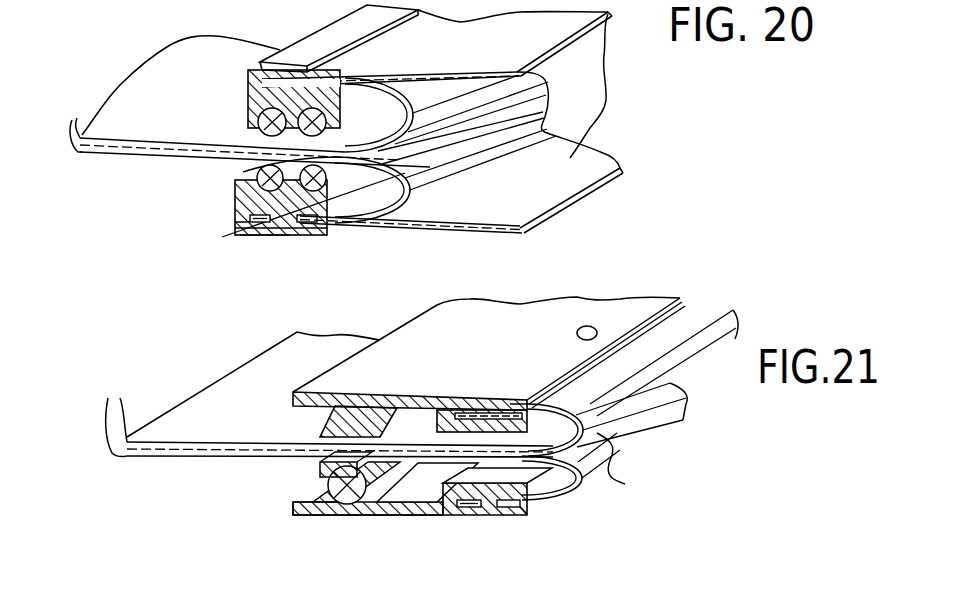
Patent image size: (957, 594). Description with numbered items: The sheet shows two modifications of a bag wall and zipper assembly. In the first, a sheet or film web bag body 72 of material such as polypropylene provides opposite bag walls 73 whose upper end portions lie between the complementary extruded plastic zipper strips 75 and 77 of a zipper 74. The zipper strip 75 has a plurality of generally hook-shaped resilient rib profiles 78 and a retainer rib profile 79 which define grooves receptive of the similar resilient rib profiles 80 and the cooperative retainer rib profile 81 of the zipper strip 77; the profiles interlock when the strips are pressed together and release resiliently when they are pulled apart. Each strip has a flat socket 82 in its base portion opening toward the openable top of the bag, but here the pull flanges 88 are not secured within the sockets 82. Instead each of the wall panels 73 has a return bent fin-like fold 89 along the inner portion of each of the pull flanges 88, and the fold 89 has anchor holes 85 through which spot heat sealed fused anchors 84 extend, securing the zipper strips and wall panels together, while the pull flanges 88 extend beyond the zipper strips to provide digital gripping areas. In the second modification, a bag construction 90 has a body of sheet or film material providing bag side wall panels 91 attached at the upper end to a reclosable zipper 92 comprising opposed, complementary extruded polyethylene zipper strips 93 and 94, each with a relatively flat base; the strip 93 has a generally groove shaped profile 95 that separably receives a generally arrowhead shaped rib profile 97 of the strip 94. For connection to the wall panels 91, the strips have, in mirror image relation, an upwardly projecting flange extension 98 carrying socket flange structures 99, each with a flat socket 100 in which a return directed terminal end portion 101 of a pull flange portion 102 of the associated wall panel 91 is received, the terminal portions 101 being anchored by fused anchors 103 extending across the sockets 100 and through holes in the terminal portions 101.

In FIG. 20, the bag body 72 is at (177, 160).
In FIG. 20, the bag walls 73 is at (77, 118).
In FIG. 20, the zipper 74 is at (225, 224).
In FIG. 20, the zipper strip 75 is at (236, 224).
In FIG. 20, the zipper strip 77 is at (260, 68).
In FIG. 20, the resilient rib profiles 78 is at (318, 175).
In FIG. 20, the retainer rib profile 79 is at (236, 181).
In FIG. 20, the resilient rib profiles 80 is at (258, 121).
In FIG. 20, the retainer rib profile 81 is at (330, 125).
In FIG. 20, the socket 82 is at (236, 218).
In FIG. 20, the fused anchors 84 is at (268, 232).
In FIG. 20, the anchor holes 85 is at (292, 234).
In FIG. 20, the pull flanges 88 is at (606, 106).
In FIG. 20, the fin-like fold 89 is at (258, 232).
In FIG. 21, the bag construction 90 is at (175, 461).
In FIG. 21, the bag side wall panels 91 is at (120, 398).
In FIG. 21, the zipper 92 is at (322, 517).
In FIG. 21, the zipper strip 93 is at (290, 514).
In FIG. 21, the zipper strip 94 is at (300, 392).
In FIG. 21, the groove shaped profile 95 is at (320, 470).
In FIG. 21, the arrowhead shaped rib profile 97 is at (336, 428).
In FIG. 21, the flange extension 98 is at (400, 395).
In FIG. 21, the socket flange structures 99 is at (548, 420).
In FIG. 21, the socket 100 is at (455, 410).
In FIG. 21, the terminal end portion 101 is at (490, 411).
In FIG. 21, the pull flange portion 102 is at (614, 482).
In FIG. 21, the fused anchors 103 is at (597, 328).